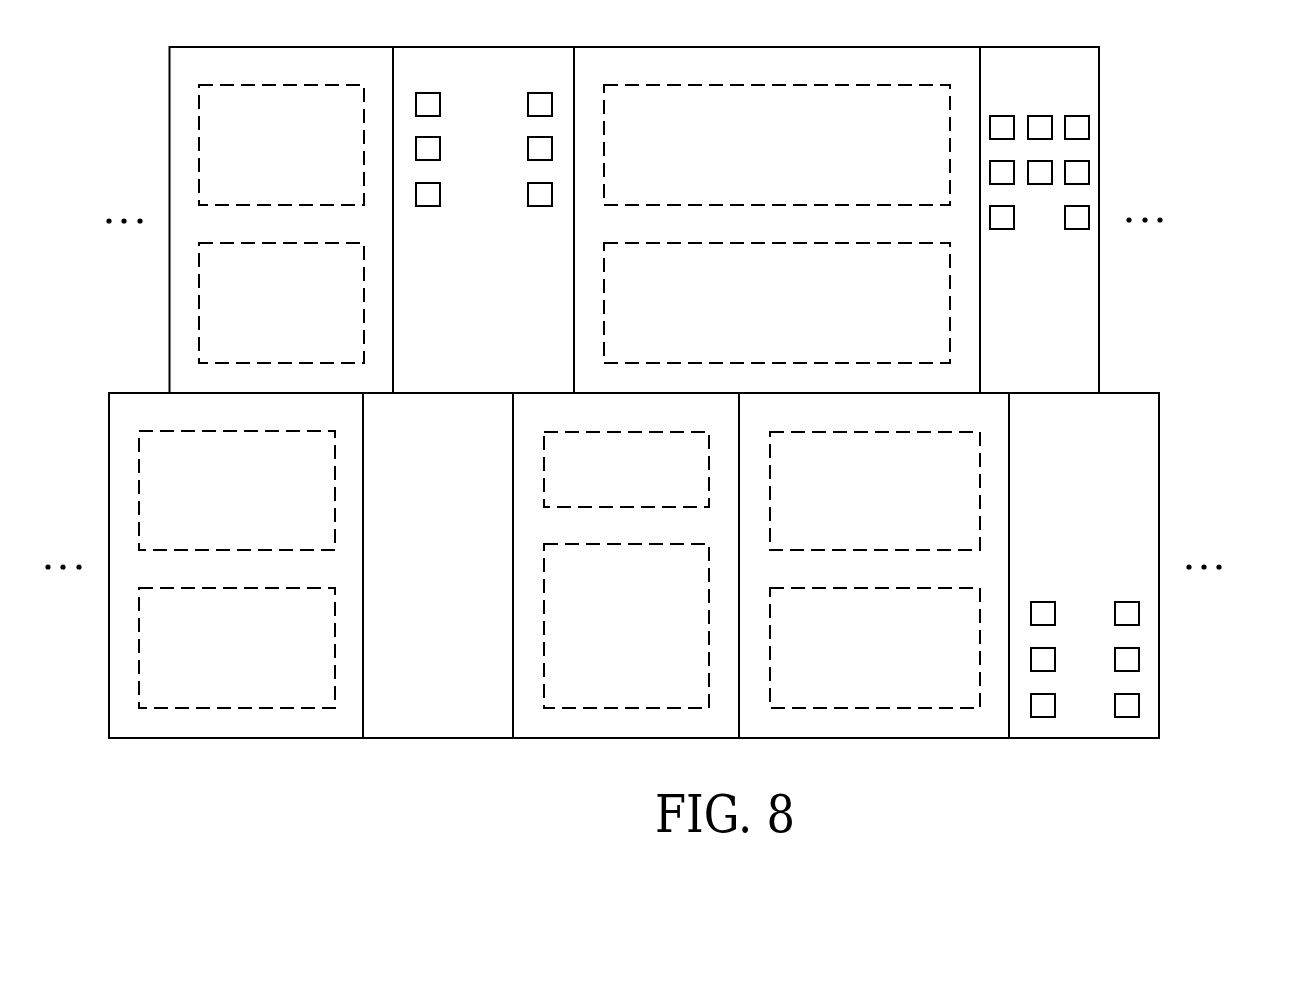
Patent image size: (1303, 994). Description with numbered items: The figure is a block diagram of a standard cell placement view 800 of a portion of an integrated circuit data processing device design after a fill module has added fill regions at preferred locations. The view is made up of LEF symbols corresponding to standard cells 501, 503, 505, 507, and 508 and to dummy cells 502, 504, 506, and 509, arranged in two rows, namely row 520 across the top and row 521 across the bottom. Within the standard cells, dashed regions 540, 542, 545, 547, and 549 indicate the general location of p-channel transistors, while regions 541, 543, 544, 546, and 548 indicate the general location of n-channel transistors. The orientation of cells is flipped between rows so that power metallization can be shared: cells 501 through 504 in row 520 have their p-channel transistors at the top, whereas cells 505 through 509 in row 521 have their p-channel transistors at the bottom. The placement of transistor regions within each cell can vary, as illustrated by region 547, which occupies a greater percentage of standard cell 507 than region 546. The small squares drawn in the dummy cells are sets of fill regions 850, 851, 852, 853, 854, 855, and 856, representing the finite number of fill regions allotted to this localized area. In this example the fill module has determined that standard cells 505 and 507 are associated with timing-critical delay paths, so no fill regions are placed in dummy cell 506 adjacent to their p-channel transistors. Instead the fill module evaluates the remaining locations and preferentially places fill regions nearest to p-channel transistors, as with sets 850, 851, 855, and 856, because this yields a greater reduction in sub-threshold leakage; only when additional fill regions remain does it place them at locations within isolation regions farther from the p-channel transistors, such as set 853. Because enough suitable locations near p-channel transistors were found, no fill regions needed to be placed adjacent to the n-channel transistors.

The standard cell placement view 800 is at (550, 813).
The standard cell 501 is at (210, 77).
The dummy cell 502 is at (451, 77).
The standard cell 503 is at (615, 77).
The dummy cell 504 is at (1022, 77).
The standard cell 505 is at (151, 422).
The dummy cell 506 is at (413, 422).
The standard cell 507 is at (555, 422).
The standard cell 508 is at (781, 422).
The dummy cell 509 is at (1058, 422).
The row 520 is at (1166, 214).
The row 521 is at (1225, 562).
The p-channel transistor region 540 is at (248, 115).
The n-channel transistor region 541 is at (248, 278).
The p-channel transistor region 542 is at (653, 115).
The n-channel transistor region 543 is at (653, 280).
The n-channel transistor region 544 is at (188, 460).
The p-channel transistor region 545 is at (188, 625).
The n-channel transistor region 546 is at (593, 467).
The p-channel transistor region 547 is at (593, 582).
The n-channel transistor region 548 is at (819, 467).
The p-channel transistor region 549 is at (819, 625).
The fill region set 850 is at (430, 220).
The fill region set 851 is at (541, 220).
The fill region set 852 is at (1007, 240).
The fill region set 853 is at (1037, 195).
The fill region set 854 is at (1075, 240).
The fill region set 855 is at (1045, 590).
The fill region set 856 is at (1127, 590).